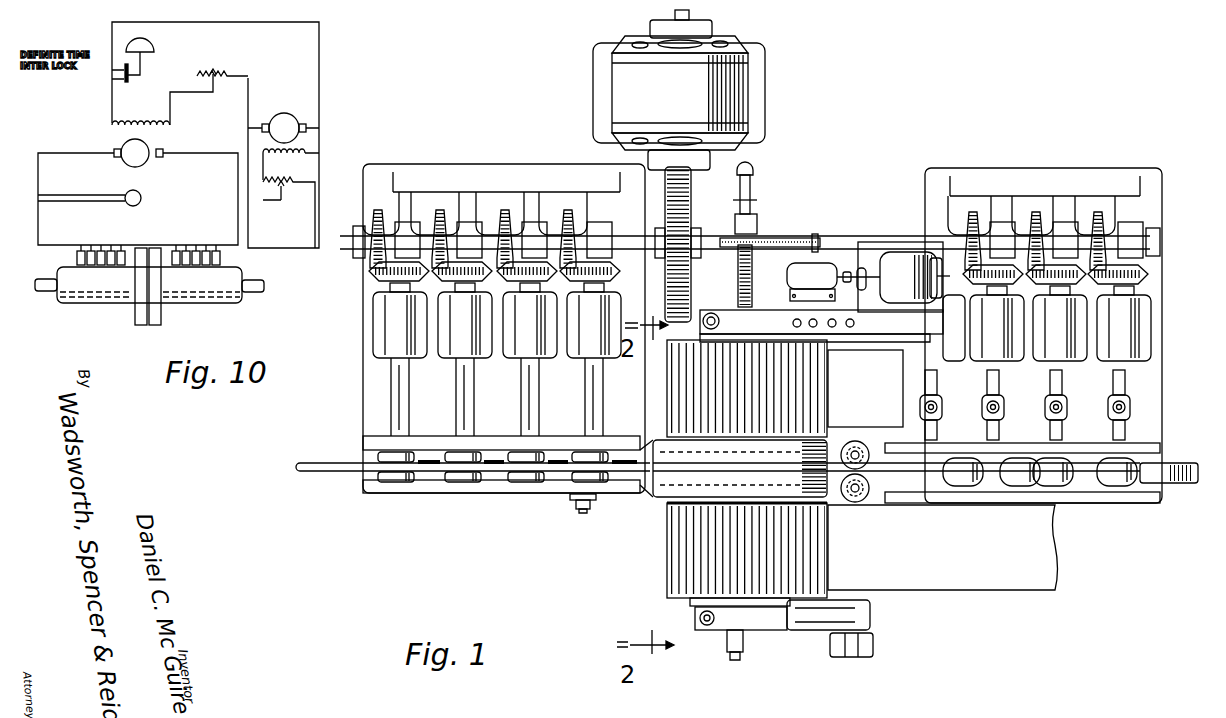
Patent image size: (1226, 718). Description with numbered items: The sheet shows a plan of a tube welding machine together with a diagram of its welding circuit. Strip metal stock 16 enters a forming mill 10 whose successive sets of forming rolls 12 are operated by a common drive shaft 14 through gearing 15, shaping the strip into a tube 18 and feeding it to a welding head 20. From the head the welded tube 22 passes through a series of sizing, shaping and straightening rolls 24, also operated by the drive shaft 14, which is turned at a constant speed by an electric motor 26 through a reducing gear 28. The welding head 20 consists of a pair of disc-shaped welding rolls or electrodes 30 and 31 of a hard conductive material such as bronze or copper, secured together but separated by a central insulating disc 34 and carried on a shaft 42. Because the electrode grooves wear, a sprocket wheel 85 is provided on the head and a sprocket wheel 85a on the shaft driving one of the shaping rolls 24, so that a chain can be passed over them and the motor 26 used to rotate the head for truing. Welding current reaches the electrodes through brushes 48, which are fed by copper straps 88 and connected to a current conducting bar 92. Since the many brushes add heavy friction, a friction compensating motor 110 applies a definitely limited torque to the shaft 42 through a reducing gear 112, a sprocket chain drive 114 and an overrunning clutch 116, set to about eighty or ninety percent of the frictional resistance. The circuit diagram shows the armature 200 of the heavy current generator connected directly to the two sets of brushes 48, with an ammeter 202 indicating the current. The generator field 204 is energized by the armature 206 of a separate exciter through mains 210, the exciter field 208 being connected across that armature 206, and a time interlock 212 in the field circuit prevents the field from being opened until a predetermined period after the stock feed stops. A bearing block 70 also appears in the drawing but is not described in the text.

In FIG. 1, the forming mill 10 is at (1152, 305).
In FIG. 1, the forming rolls 12 is at (1115, 470).
In FIG. 1, the drive shaft 14 is at (350, 233).
In FIG. 1, the gearing 15 is at (506, 215).
In FIG. 1, the strip of metal stock 16 is at (1172, 466).
In FIG. 1, the tube 18 is at (895, 478).
In FIG. 10, the welding head 20 is at (158, 250).
In FIG. 1, the welding head 20 is at (662, 436).
In FIG. 1, the welded tube 22 is at (630, 470).
In FIG. 1, the sizing, shaping and straightening rolls 24 is at (515, 482).
In FIG. 1, the electric motor 26 is at (625, 104).
In FIG. 1, the reducing gear 28 is at (690, 198).
In FIG. 10, the welding roll 30 is at (135, 316).
In FIG. 1, the welding roll 30 is at (655, 444).
In FIG. 10, the welding roll 31 is at (161, 313).
In FIG. 1, the welding roll 31 is at (654, 488).
In FIG. 1, the central insulating disc 34 is at (700, 472).
In FIG. 1, the shaft 42 is at (752, 215).
In FIG. 10, the brushes 48 is at (77, 258).
In FIG. 1, the bearing block 70 is at (753, 612).
In FIG. 1, the sprocket wheel 85 is at (668, 507).
In FIG. 1, the sprocket wheel 85a is at (575, 500).
In FIG. 1, the copper straps 88 is at (893, 380).
In FIG. 1, the current conducting bar 92 is at (718, 380).
In FIG. 1, the motor 110 is at (905, 265).
In FIG. 1, the reducing gear 112 is at (820, 262).
In FIG. 1, the sprocket chain drive 114 is at (776, 236).
In FIG. 1, the overrunning clutch 116 is at (740, 256).
In FIG. 10, the armature of heavy current generator 200 is at (150, 148).
In FIG. 10, the ammeter 202 is at (141, 193).
In FIG. 10, the field of heavy current generator 204 is at (112, 130).
In FIG. 10, the exciter armature 206 is at (286, 113).
In FIG. 10, the exciter field 208 is at (300, 158).
In FIG. 10, the mains 210 is at (319, 57).
In FIG. 10, the time interlock 212 is at (129, 82).